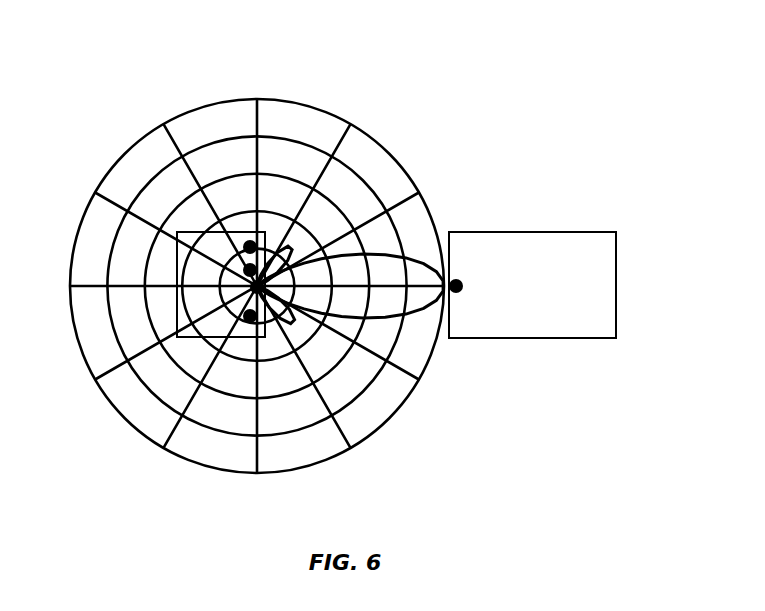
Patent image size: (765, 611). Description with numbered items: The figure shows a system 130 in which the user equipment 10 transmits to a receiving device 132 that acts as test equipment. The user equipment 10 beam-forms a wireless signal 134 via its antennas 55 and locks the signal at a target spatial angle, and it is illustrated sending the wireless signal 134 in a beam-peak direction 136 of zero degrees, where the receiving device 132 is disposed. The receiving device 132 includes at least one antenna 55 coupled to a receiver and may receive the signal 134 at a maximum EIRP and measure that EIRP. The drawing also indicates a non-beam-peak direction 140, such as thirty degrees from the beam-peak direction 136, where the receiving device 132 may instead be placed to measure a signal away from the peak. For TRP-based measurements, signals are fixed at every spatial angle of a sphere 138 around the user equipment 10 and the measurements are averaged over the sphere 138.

The system 130 is at (348, 264).
The sphere 138 is at (393, 413).
The non-beam-peak direction 140 is at (399, 196).
The beam-peak direction 136 is at (445, 269).
The wireless signal 134 is at (315, 314).
The user equipment 10 is at (177, 268).
The antenna 55 is at (248, 242).
The receiving device 132 is at (617, 280).